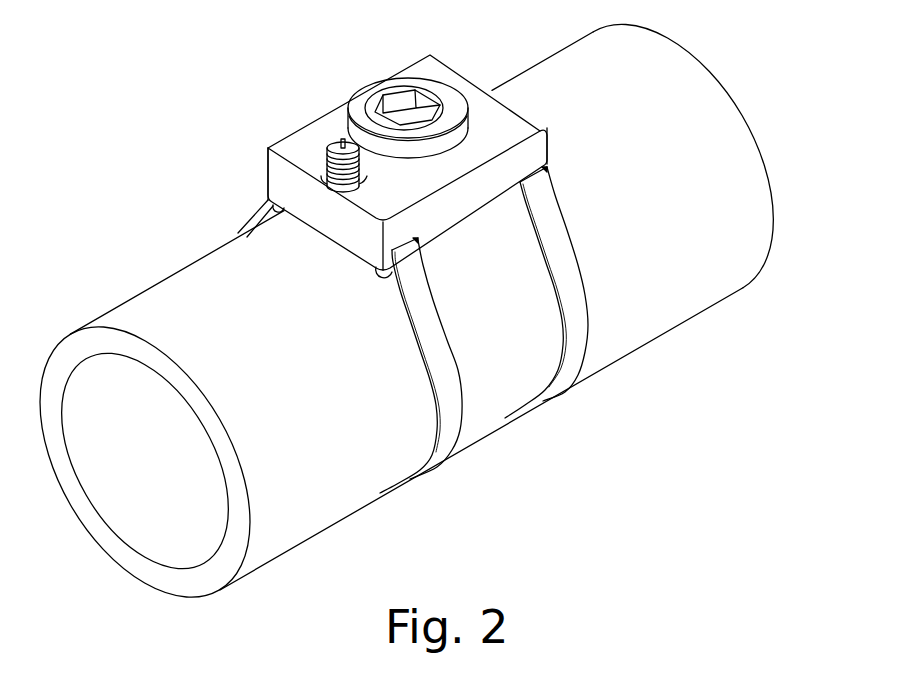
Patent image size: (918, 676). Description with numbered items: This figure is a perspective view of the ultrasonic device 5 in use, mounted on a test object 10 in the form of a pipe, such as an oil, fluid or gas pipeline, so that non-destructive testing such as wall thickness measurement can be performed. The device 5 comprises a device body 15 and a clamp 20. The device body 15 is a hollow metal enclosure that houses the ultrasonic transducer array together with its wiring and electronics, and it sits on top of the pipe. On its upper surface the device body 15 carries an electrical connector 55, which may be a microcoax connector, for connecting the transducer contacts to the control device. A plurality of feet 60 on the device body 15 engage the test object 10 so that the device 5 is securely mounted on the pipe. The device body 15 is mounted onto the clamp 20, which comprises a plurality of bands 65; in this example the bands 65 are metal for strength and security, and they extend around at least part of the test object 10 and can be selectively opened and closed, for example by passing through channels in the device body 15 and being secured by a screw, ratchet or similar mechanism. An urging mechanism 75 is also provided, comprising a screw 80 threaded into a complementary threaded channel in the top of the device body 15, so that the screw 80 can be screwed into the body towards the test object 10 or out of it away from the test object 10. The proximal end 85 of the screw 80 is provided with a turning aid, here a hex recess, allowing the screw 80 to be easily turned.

The ultrasonic device 5 is at (273, 92).
The test object 10 is at (751, 153).
The device body 15 is at (462, 85).
The clamp 20 is at (574, 360).
The electrical connector 55 is at (338, 140).
The feet 60 is at (272, 216).
The bands 65 is at (262, 196).
The urging mechanism 75 is at (393, 88).
The screw 80 is at (425, 82).
The proximal end 85 is at (378, 92).